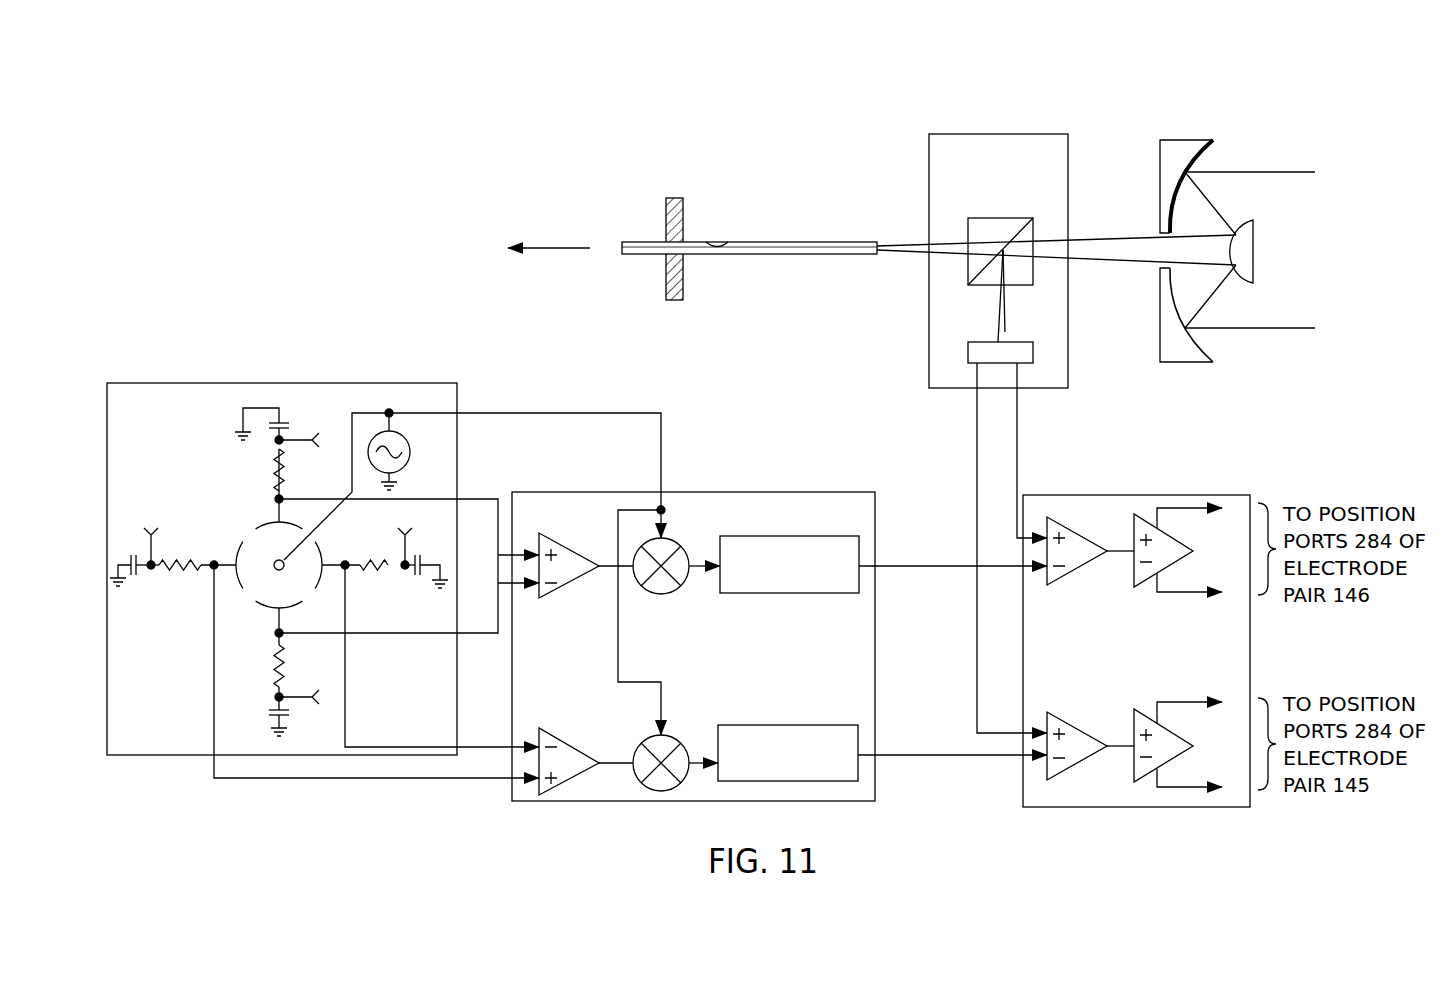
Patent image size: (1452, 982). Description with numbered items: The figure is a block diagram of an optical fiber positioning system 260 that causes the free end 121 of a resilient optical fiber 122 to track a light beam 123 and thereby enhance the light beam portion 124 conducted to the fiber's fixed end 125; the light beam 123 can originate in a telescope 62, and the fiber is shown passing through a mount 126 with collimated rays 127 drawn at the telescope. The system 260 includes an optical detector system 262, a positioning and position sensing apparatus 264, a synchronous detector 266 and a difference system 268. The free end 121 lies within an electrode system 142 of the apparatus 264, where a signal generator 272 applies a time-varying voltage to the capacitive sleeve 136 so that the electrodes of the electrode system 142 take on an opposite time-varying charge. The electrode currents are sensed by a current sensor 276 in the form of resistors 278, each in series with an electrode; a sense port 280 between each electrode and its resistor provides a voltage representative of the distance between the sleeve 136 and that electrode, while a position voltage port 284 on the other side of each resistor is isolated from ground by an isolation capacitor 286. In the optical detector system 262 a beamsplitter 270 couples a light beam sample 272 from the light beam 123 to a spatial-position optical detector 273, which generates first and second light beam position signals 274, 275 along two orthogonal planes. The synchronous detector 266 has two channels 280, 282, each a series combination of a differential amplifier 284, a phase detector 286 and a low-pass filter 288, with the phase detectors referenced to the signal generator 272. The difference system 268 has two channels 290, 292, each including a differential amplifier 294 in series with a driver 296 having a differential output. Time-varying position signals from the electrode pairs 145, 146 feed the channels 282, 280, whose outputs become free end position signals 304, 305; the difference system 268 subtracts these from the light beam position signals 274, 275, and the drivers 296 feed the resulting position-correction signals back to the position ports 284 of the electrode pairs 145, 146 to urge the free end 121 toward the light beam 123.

The optical fiber positioning system 260 is at (412, 228).
The optical detector system 262 is at (947, 132).
The positioning and position sensing apparatus 264 is at (213, 381).
The synchronous detector 266 is at (801, 490).
The difference system 268 is at (1149, 493).
The beamsplitter 270 is at (998, 218).
The signal generator 272 is at (410, 444).
The spatial-position optical detector 273 is at (1034, 353).
The first light beam position signal 274 is at (976, 412).
The second light beam position signal 275 is at (1018, 411).
The current sensor 276 is at (213, 678).
The resistors 278 is at (276, 665).
The sense port / first channel 280 is at (673, 602).
The second channel 282 is at (771, 704).
The position voltage port / differential amplifier 284 is at (313, 438).
The isolation capacitor / phase detector 286 is at (688, 540).
The low-pass filter 288 is at (788, 537).
The first channel of difference system 290 is at (1088, 588).
The second channel of difference system 292 is at (1141, 692).
The differential amplifier 294 is at (1055, 517).
The driver 296 is at (1175, 530).
The first free end position signal 304 is at (912, 568).
The second free end position signal 305 is at (915, 757).
The telescope 62 is at (1158, 162).
The free end 121 is at (866, 256).
The resilient optical fiber 122 is at (721, 240).
The light beam 123 is at (1102, 240).
The light beam portion 124 is at (549, 249).
The fixed end 125 is at (632, 240).
The fiber mount 126 is at (683, 198).
The collimated beam 127 is at (1255, 172).
The sleeve 136 is at (783, 242).
The electrode system 142 is at (237, 552).
The electrode pair 145 is at (222, 553).
The electrode pair 146 is at (276, 514).